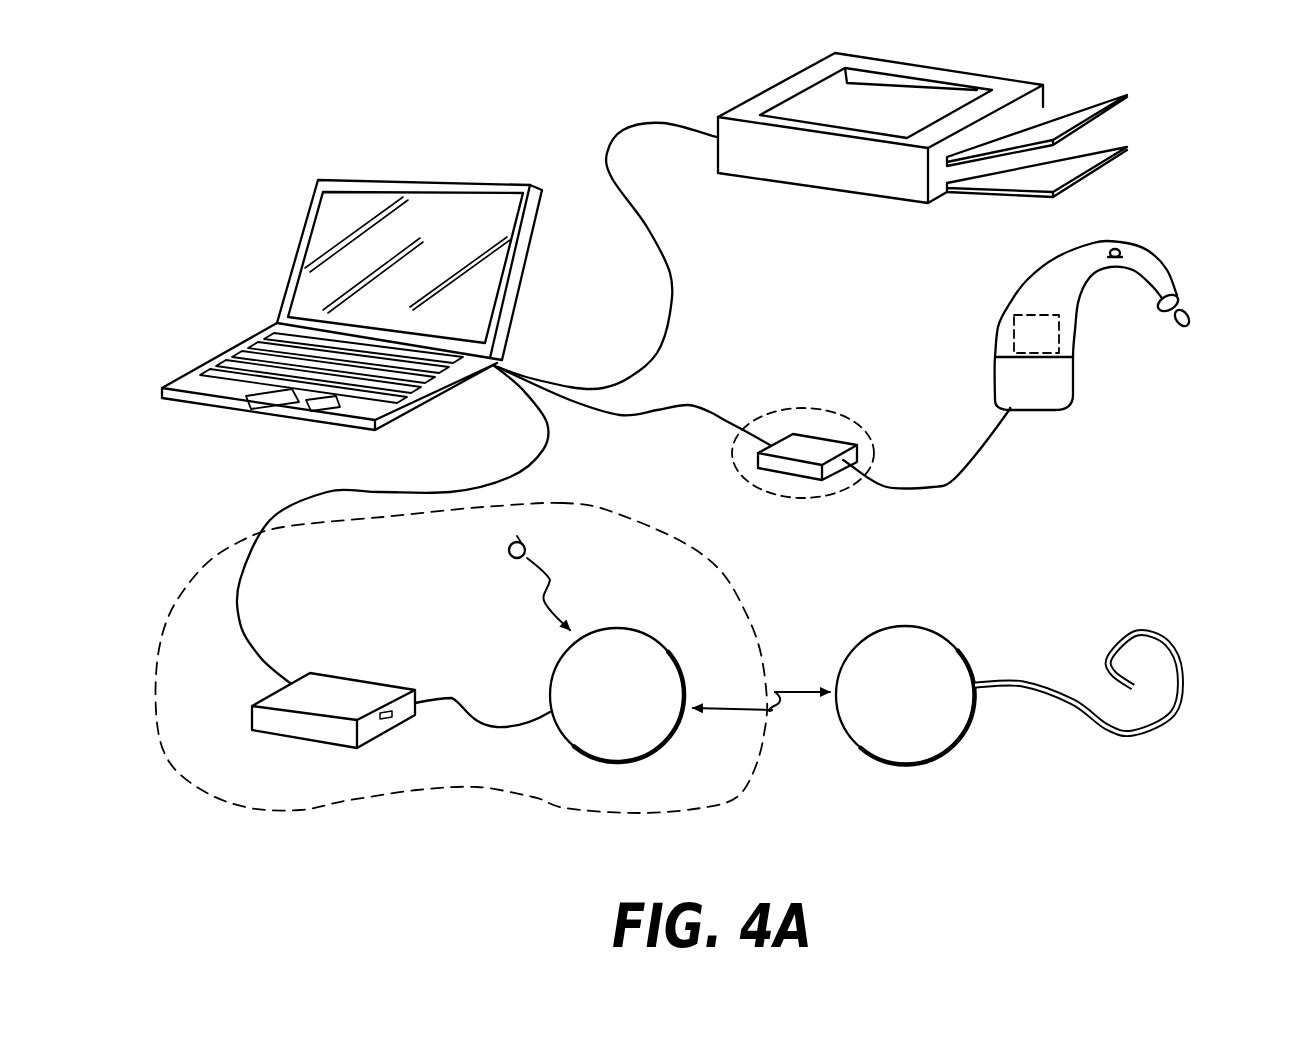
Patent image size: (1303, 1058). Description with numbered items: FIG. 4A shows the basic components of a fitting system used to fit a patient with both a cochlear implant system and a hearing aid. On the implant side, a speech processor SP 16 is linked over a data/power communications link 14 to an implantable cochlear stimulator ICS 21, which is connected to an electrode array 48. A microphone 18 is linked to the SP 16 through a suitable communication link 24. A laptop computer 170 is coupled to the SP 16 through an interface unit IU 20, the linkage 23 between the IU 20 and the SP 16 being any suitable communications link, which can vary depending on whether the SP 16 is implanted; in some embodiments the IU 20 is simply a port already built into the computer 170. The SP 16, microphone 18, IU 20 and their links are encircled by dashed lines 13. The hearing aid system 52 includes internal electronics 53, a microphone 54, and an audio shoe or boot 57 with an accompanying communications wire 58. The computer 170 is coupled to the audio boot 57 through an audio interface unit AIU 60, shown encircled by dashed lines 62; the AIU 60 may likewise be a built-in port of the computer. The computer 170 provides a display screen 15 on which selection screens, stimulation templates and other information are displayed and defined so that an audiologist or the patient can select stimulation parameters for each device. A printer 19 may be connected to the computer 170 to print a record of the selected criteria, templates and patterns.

The dashed lines 13 is at (290, 810).
The data/power communications link 14 is at (775, 692).
The display screen 15 is at (340, 229).
The SP 16 is at (633, 627).
The microphone 18 is at (525, 547).
The printer 19 is at (837, 190).
The interface unit 20 is at (372, 680).
The ICS 21 is at (903, 626).
The communications link 23 is at (452, 698).
The communication link 24 is at (550, 578).
The electrode array 48 is at (1133, 633).
The hearing aid system 52 is at (1125, 306).
The internal electronics 53 is at (1037, 327).
The microphone 54 is at (1115, 248).
The audio shoe 57 is at (1055, 387).
The communications wire 58 is at (951, 485).
The audio interface unit 60 is at (812, 450).
The dashed lines 62 is at (782, 410).
The laptop computer 170 is at (208, 360).